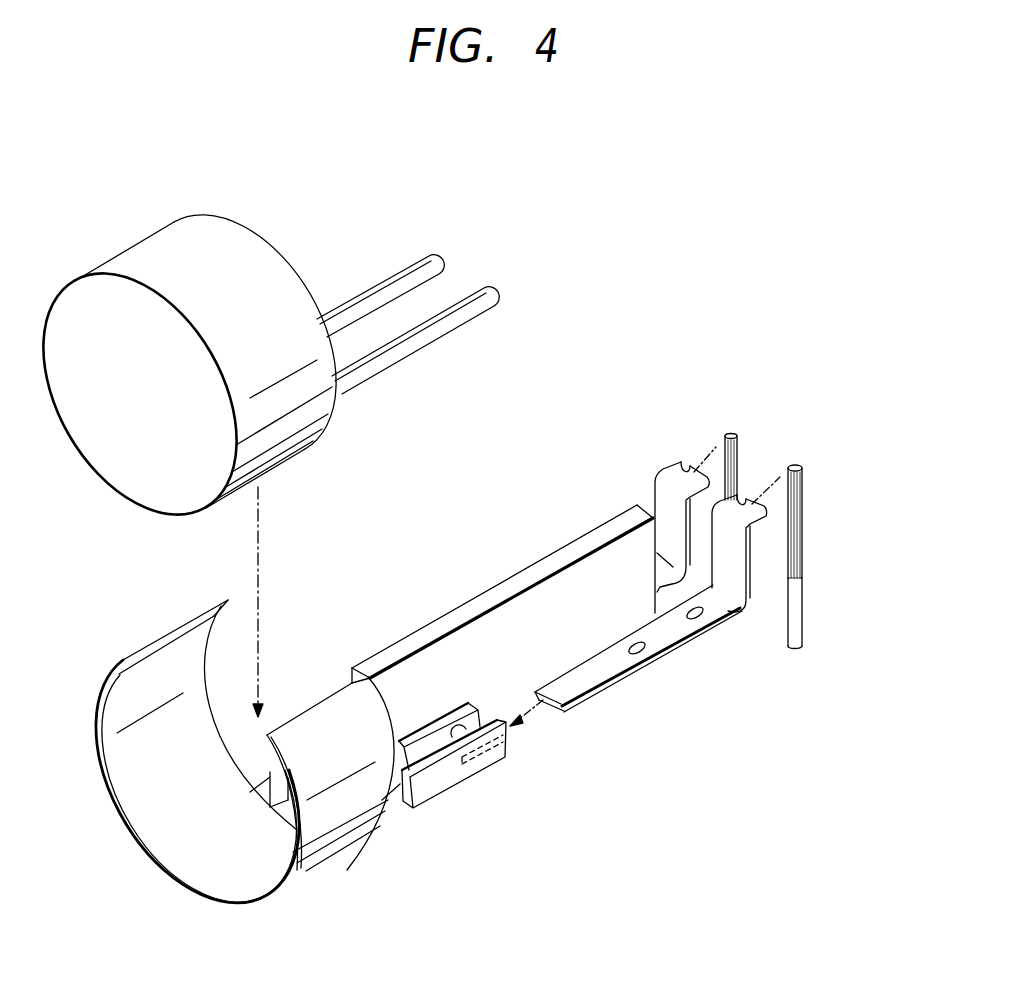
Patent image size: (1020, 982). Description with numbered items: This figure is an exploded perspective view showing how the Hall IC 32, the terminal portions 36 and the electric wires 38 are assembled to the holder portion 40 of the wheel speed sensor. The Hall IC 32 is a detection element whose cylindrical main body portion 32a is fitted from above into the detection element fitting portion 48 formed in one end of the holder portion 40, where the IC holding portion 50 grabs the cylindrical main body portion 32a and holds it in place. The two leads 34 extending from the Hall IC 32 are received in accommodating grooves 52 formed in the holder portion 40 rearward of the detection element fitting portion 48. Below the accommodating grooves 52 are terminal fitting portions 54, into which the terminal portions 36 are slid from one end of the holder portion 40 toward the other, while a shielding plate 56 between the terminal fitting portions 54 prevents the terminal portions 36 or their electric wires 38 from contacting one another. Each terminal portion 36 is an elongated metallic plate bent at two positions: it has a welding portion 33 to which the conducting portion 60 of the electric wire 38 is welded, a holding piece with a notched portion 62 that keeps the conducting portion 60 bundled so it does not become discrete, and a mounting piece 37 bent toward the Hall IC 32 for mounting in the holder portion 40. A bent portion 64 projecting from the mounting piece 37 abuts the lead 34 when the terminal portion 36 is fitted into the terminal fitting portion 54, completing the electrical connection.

The Hall IC 32 is at (288, 175).
The cylindrical main body portion 32a is at (145, 240).
The leads 34 is at (436, 258).
The holder portion 40 is at (501, 564).
The shielding plate 56 is at (437, 628).
The detection element fitting portion 48 is at (184, 824).
The IC holding portion 50 is at (333, 827).
The accommodating grooves 52 is at (464, 728).
The terminal fitting portions 54 is at (477, 773).
The terminal portion 36 is at (712, 666).
The mounting piece 37 is at (590, 697).
The bent portion 64 is at (620, 673).
The welding portion 33 is at (660, 507).
The notched portion 62 is at (686, 466).
The conducting portion 60 is at (735, 447).
The electric wire 38 is at (800, 603).